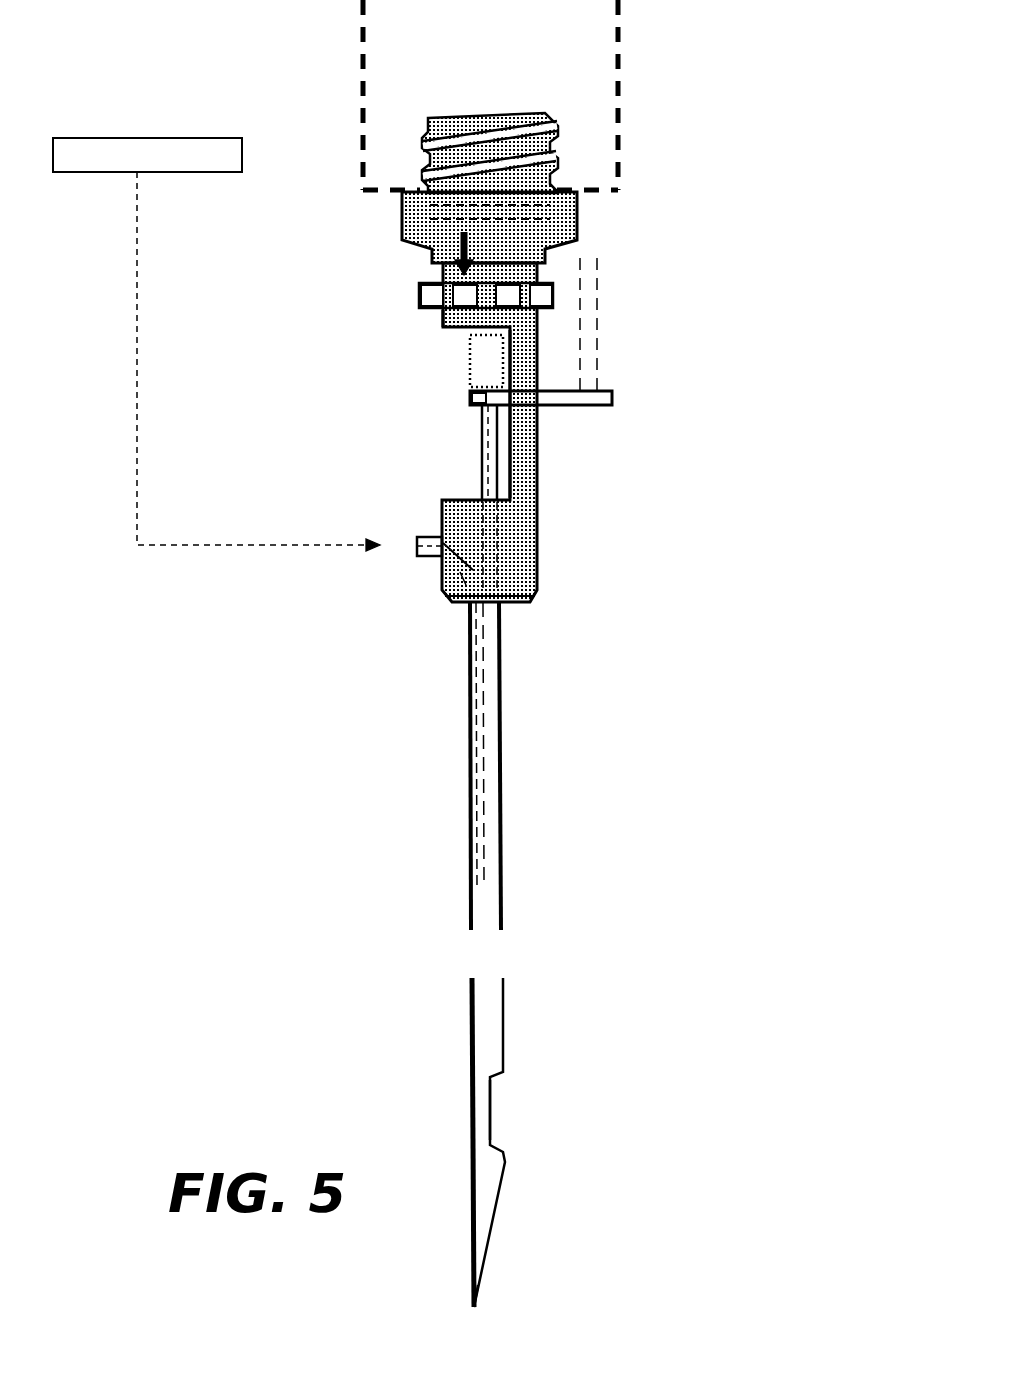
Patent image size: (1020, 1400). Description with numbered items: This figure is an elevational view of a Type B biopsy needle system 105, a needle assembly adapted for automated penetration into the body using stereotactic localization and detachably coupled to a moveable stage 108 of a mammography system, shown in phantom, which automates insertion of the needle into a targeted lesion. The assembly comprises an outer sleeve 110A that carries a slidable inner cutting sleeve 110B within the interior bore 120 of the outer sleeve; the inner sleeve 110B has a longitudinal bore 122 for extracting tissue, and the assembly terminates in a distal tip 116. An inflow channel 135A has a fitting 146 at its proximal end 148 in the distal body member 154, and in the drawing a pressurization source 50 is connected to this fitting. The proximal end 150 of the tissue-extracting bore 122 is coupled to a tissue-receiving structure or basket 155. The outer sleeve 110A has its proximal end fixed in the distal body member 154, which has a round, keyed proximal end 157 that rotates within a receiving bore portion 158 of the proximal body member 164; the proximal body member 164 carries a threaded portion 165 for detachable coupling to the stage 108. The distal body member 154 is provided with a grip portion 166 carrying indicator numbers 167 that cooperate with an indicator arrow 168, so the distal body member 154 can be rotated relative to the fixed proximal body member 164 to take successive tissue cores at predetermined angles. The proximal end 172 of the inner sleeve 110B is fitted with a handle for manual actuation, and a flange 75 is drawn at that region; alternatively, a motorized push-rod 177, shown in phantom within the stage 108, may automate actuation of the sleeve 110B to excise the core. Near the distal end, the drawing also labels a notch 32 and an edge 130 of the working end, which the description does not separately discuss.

The biopsy needle system 105 is at (770, 118).
The moveable stage 108 is at (620, 20).
The threaded portion 165 is at (425, 128).
The proximal body member 164 is at (402, 218).
The keyed proximal end 157 is at (580, 201).
The receiving bore portion 158 is at (580, 231).
The indicator arrow 168 is at (445, 270).
The indicator numbers 167 is at (420, 298).
The grip portion 166 is at (443, 318).
The push-rod 177 is at (600, 305).
The tissue-receiving structure 155 is at (470, 355).
The proximal end of tissue-extracting bore 150 is at (470, 392).
The flange 75 is at (596, 407).
The proximal end of inner sleeve 172 is at (537, 430).
The longitudinal bore 122 is at (480, 440).
The inner cutting sleeve 110B is at (482, 483).
The distal body member 154 is at (540, 521).
The fitting 146 is at (417, 537).
The proximal end of inflow channel 148 is at (428, 562).
The pressurization source 50 is at (216, 344).
The outer sleeve 110A is at (503, 903).
The inflow channel 135A is at (470, 733).
The interior bore 120 is at (470, 881).
The sample notch 32 is at (493, 1087).
The cutting edge 130 is at (497, 1131).
The distal tip 116 is at (476, 1288).